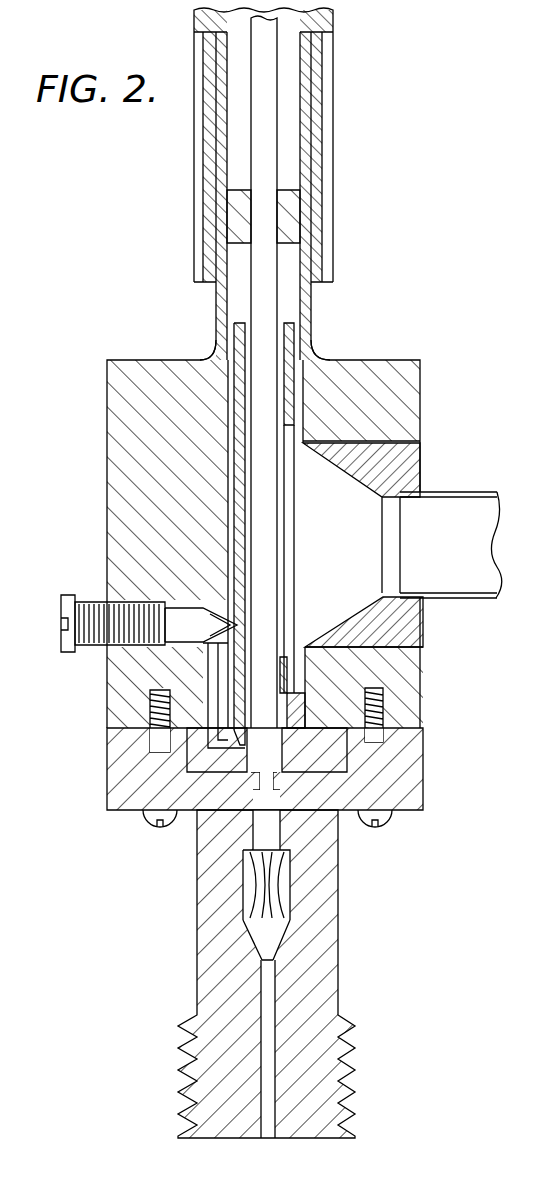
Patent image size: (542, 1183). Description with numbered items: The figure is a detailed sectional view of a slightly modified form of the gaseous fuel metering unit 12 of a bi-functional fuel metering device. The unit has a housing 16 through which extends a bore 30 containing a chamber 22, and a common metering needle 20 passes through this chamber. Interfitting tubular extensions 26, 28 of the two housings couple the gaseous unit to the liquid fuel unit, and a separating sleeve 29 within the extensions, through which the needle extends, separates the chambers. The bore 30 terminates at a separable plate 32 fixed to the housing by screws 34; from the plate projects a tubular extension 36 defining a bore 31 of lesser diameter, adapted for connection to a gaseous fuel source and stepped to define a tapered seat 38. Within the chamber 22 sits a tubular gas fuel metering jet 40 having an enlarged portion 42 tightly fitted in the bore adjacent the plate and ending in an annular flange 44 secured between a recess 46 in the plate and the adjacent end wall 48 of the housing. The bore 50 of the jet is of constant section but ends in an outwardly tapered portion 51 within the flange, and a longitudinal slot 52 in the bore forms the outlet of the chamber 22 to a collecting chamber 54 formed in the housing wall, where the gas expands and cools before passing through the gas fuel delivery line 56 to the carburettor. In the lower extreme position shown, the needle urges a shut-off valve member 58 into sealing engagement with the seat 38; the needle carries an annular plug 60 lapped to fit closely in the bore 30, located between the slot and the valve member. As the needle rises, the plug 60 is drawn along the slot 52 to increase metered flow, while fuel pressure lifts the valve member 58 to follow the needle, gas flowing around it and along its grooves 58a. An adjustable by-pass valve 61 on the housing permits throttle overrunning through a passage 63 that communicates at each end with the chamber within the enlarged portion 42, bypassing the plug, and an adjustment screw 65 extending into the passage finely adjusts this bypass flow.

The gaseous fuel metering unit 12 is at (81, 375).
The housing 16 is at (115, 412).
The metering needle 20 is at (258, 258).
The chamber 22 is at (248, 472).
The tubular extension 26 is at (302, 318).
The tubular extension 28 is at (318, 120).
The separating sleeve 29 is at (296, 222).
The bore 30 is at (292, 356).
The bore 31 is at (280, 1036).
The separable plate 32 is at (418, 772).
The screws 34 is at (172, 828).
The tubular extension 36 is at (312, 937).
The tapered seat 38 is at (262, 950).
The gas fuel metering jet 40 is at (334, 764).
The enlarged portion 42 is at (232, 604).
The annular flange 44 is at (192, 752).
The recess 46 is at (158, 760).
The end wall 48 is at (424, 752).
The bore 50 is at (255, 345).
The outwardly tapered portion 51 is at (235, 758).
The longitudinal slot 52 is at (292, 517).
The collecting chamber 54 is at (358, 573).
The gas fuel delivery line 56 is at (456, 600).
The shut-off valve member 58 is at (246, 905).
The grooves 58a is at (276, 905).
The annular plug 60 is at (296, 686).
The adjustable by-pass valve 61 is at (86, 624).
The passage 63 is at (212, 692).
The adjustment screw 65 is at (66, 596).